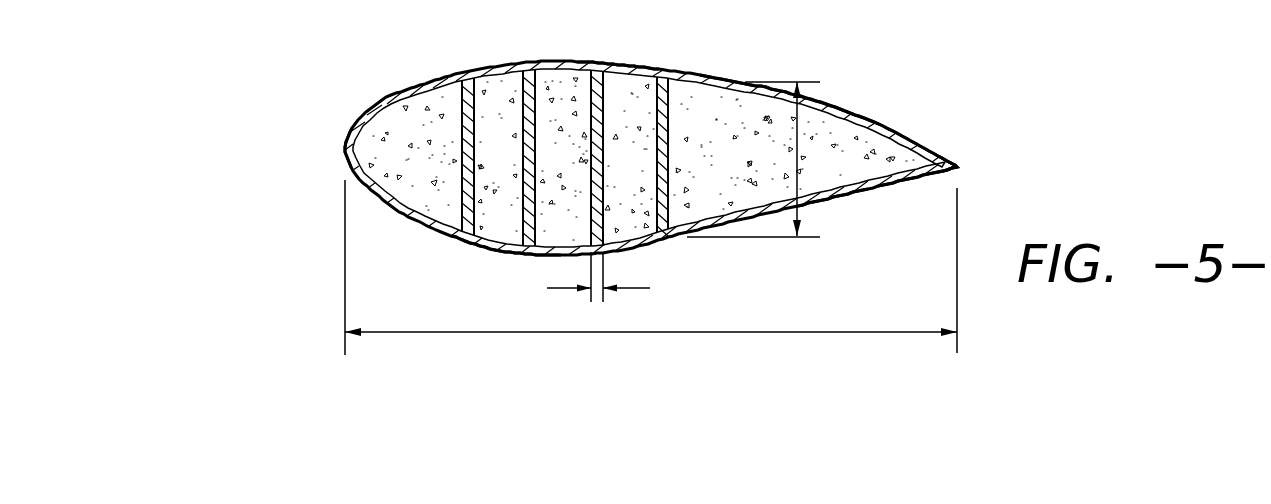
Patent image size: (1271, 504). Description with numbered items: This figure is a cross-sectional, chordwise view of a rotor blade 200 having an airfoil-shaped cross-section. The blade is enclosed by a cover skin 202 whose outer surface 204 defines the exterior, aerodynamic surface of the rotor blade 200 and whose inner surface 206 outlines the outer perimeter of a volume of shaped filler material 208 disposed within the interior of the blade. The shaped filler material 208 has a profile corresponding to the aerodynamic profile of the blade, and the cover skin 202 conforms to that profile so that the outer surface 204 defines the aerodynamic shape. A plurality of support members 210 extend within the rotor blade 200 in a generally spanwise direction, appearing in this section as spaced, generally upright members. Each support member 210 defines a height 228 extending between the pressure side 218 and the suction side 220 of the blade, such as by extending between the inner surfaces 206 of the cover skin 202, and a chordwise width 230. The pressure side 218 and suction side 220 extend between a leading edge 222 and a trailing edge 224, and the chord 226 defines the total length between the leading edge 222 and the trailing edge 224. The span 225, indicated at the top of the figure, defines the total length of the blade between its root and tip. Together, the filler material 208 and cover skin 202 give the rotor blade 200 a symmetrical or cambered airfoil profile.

The rotor blade 200 is at (1022, 96).
The cover skin 202 is at (840, 103).
The outer surface 204 is at (896, 133).
The inner surface 206 is at (745, 82).
The shaped filler material 208 is at (857, 160).
The support members 210 is at (688, 258).
The pressure side 218 is at (502, 252).
The suction side 220 is at (612, 64).
The leading edge 222 is at (347, 147).
The trailing edge 224 is at (960, 165).
The span 225 is at (938, 6).
The chord 226 is at (748, 333).
The height 228 is at (797, 187).
The chordwise width 230 is at (560, 288).